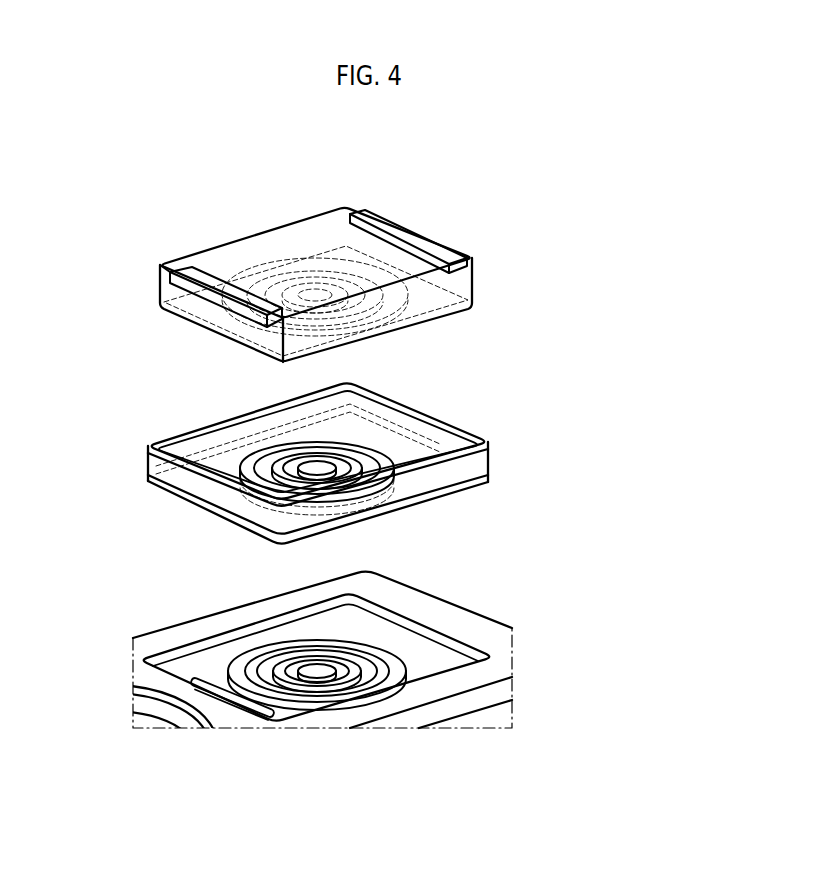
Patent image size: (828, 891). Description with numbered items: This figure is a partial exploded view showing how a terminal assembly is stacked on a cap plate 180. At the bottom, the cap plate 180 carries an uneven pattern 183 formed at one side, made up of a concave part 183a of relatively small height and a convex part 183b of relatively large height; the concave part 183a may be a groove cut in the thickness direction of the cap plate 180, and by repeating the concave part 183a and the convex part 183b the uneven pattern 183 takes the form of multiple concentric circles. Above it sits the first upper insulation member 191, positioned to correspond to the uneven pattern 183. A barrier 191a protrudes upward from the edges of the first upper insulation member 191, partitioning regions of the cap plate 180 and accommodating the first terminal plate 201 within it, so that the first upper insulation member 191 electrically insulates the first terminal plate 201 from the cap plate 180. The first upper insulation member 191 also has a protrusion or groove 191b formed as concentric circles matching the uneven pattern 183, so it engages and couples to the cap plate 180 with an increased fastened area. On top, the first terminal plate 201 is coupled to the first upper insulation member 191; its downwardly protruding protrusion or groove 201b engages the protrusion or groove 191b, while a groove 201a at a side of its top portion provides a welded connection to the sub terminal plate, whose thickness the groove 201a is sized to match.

The first terminal plate 201 is at (404, 191).
The groove 201a is at (222, 275).
The protrusion or groove 201b is at (368, 283).
The first upper insulation member 191 is at (436, 392).
The barrier 191a is at (488, 457).
The protrusion or groove 191b is at (379, 452).
The cap plate 180 is at (472, 622).
The uneven pattern 183 is at (464, 801).
The concave part 183a is at (387, 677).
The convex part 183b is at (357, 683).